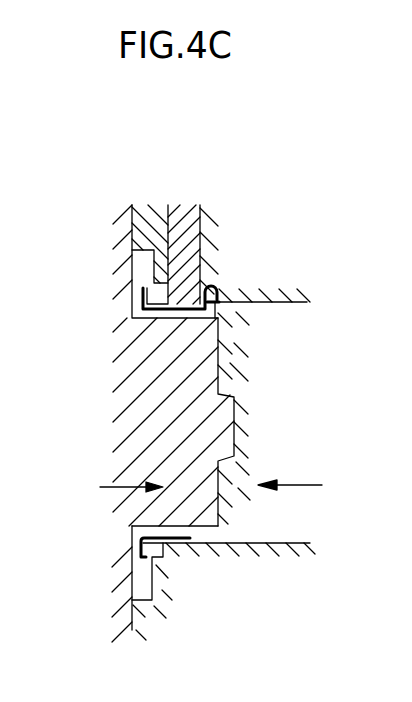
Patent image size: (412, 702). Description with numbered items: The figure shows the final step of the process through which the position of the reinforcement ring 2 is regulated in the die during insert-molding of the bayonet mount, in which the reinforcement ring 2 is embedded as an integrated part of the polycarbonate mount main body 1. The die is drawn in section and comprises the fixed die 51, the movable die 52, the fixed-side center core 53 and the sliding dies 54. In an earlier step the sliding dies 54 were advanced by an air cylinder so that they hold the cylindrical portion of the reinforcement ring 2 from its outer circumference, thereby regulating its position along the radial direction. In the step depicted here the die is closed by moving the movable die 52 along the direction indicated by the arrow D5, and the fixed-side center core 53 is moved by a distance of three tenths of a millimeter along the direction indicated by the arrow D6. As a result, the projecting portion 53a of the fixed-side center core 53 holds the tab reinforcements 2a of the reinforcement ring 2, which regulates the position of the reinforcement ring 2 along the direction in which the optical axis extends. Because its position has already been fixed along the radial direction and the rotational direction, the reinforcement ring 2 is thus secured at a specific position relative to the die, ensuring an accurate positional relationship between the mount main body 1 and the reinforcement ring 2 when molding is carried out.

The mount main body 1 is at (140, 578).
The reinforcement ring 2 is at (167, 544).
The tab reinforcements 2a is at (218, 293).
The fixed die 51 is at (151, 219).
The movable die 52 is at (138, 408).
The fixed-side center core 53 is at (273, 399).
The projecting portion 53a is at (221, 309).
The sliding dies 54 is at (187, 211).
The arrow D5 is at (131, 471).
The arrow D6 is at (290, 470).